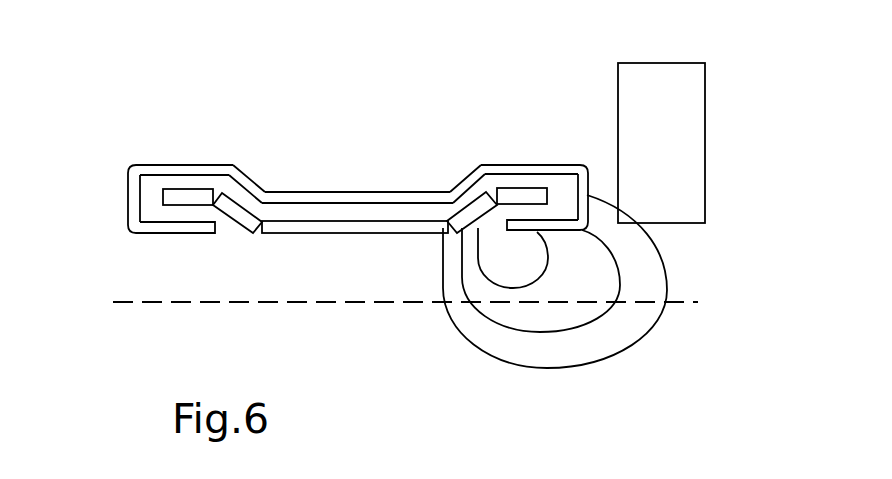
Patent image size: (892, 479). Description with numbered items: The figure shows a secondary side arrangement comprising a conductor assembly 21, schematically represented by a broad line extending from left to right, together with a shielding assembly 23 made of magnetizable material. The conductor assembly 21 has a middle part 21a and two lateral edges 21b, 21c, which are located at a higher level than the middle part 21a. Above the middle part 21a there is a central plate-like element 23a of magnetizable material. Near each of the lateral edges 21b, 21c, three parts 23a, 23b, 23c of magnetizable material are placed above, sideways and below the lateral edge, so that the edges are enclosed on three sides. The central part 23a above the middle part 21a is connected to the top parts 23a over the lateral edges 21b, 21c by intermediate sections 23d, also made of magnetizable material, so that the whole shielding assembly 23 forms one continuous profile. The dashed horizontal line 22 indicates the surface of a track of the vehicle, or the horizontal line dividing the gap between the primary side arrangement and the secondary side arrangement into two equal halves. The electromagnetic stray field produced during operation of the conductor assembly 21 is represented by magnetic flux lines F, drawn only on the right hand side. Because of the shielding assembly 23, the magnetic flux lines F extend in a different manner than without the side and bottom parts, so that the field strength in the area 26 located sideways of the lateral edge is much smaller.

The shielding assembly 23 is at (324, 180).
The plate-like element 23a is at (177, 165).
The side part of magnetizable material 23b is at (127, 196).
The bottom part of magnetizable material 23c is at (152, 233).
The intermediate section 23d is at (248, 177).
The conductor assembly 21 is at (364, 200).
The middle part 21a is at (360, 235).
The lateral edge 21b is at (183, 207).
The lateral edge 21c is at (522, 188).
The dashed horizontal line 22 is at (703, 301).
The area 26 is at (705, 113).
The magnetic flux lines F is at (475, 343).